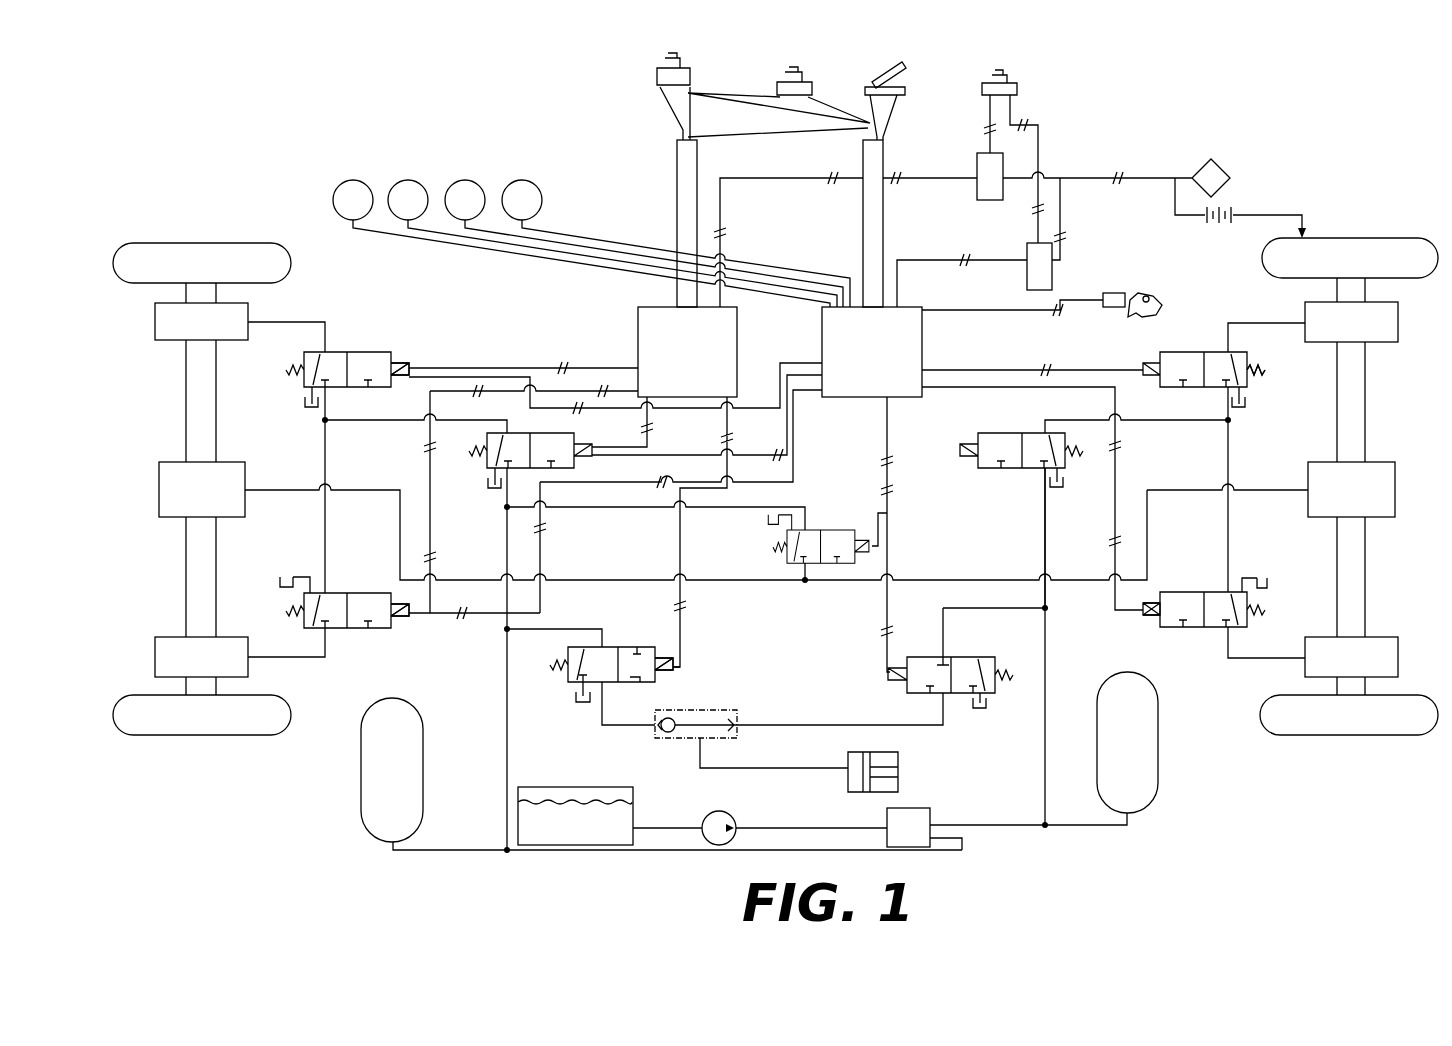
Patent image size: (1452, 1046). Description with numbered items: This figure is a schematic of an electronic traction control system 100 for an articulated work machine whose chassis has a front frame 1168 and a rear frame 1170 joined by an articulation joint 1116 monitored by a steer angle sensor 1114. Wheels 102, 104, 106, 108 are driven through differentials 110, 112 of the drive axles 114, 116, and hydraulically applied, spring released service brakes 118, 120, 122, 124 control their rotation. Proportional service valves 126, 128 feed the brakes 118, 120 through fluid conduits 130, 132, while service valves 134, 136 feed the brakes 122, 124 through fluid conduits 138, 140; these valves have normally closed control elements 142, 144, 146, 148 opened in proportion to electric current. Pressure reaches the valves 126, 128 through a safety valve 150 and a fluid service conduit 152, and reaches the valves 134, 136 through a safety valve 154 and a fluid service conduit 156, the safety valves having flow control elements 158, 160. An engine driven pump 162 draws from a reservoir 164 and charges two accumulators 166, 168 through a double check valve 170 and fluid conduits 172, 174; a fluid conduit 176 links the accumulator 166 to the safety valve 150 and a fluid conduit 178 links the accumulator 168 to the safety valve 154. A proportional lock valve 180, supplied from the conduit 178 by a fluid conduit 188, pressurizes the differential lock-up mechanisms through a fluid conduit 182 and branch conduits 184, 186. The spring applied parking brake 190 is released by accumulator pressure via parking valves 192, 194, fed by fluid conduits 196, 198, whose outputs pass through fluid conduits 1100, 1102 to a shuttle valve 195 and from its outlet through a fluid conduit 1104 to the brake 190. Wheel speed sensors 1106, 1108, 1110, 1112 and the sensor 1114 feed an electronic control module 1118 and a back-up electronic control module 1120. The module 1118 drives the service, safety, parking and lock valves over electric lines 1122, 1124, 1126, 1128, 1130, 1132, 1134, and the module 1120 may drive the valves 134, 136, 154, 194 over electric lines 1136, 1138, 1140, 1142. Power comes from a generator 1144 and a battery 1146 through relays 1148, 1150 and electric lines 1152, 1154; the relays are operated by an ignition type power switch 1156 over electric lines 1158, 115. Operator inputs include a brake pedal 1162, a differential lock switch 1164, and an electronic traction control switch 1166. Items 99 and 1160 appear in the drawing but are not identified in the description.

The signal line 99 is at (878, 514).
The electronic traction control system 100 is at (266, 97).
The wheel 102 is at (1380, 240).
The wheel 104 is at (1355, 736).
The wheel 106 is at (186, 243).
The wheel 108 is at (175, 735).
The differential 110 is at (1310, 518).
The differential 112 is at (160, 519).
The drive axle 114 is at (1337, 415).
The drive axle 116 is at (186, 420).
The service brake 118 is at (1392, 345).
The service brake 120 is at (1385, 637).
The service brake 122 is at (160, 342).
The service brake 124 is at (165, 640).
The electrically controlled proportional service valve 126 is at (1266, 370).
The electrically controlled proportional service valve 128 is at (1186, 628).
The fluid conduit 130 is at (1293, 323).
The fluid conduit 132 is at (1275, 660).
The electrically controlled proportional service valve 134 is at (362, 352).
The electrically controlled proportional service valve 136 is at (366, 630).
The fluid conduit 138 is at (308, 326).
The fluid conduit 140 is at (300, 660).
The control element 142 is at (1176, 352).
The control element 144 is at (1160, 621).
The control element 146 is at (398, 362).
The control element 148 is at (400, 616).
The electrically controlled proportional safety valve 150 is at (990, 433).
The fluid service conduit 152 is at (1148, 421).
The electrically controlled proportional safety valve 154 is at (487, 470).
The fluid service conduit 156 is at (362, 423).
The fluid flow control element 158 is at (1002, 468).
The fluid flow control element 160 is at (580, 470).
The engine driven pump 162 is at (706, 843).
The reservoir 164 is at (637, 817).
The accumulator 166 is at (1160, 768).
The accumulator 168 is at (362, 800).
The double check valve 170 is at (932, 816).
The fluid conduit 172 is at (1078, 826).
The fluid conduit 174 is at (432, 849).
The fluid conduit 176 is at (1045, 760).
The fluid conduit 178 is at (507, 746).
The electrically controlled proportional lock valve 180 is at (803, 582).
The fluid conduit 182 is at (810, 581).
The branch conduit 184 is at (1147, 540).
The branch conduit 186 is at (688, 585).
The fluid conduit 188 is at (660, 508).
The parking brake 190 is at (898, 758).
The parking valve 192 is at (936, 657).
The parking valve 194 is at (622, 647).
The shuttle valve 195 is at (688, 740).
The fluid conduit 196 is at (965, 609).
The fluid conduit 198 is at (530, 629).
The fluid conduit 1100 is at (943, 708).
The fluid conduit 1102 is at (603, 736).
The fluid conduit 1104 is at (840, 770).
The wheel speed sensor 1106 is at (350, 180).
The wheel speed sensor 1108 is at (405, 180).
The wheel speed sensor 1110 is at (465, 180).
The wheel speed sensor 1112 is at (540, 163).
The steer angle sensor 1114 is at (1113, 293).
The articulation joint 1116 is at (1162, 300).
The electronic control module 1118 is at (926, 352).
The back-up electronic control module 1120 is at (638, 318).
The electric line 1122 is at (1090, 370).
The electric line 1124 is at (1116, 392).
The electric line 1126 is at (872, 352).
The electric line 1128 is at (793, 470).
The electric line 1130 is at (922, 399).
The electric line 1132 is at (788, 410).
The electric line 1134 is at (890, 556).
The electric line 1136 is at (520, 368).
The electric line 1138 is at (613, 388).
The electric line 1140 is at (648, 420).
The electric line 1142 is at (680, 668).
The engine driven generator 1144 is at (1222, 166).
The battery 1146 is at (1237, 213).
The relay 1148 is at (1027, 278).
The relay 1150 is at (977, 172).
The electric line 1152 is at (905, 260).
The electric line 1154 is at (788, 178).
The power switch 1156 is at (1018, 90).
The electric line 1158 is at (1038, 220).
The lever 1160 is at (863, 238).
The brake pedal 1162 is at (905, 68).
The differential lock switch 1164 is at (812, 90).
The electronic traction control switch 1166 is at (657, 78).
The front frame 1168 is at (1312, 755).
The rear frame 1170 is at (147, 765).
The electric line 115 is at (988, 116).